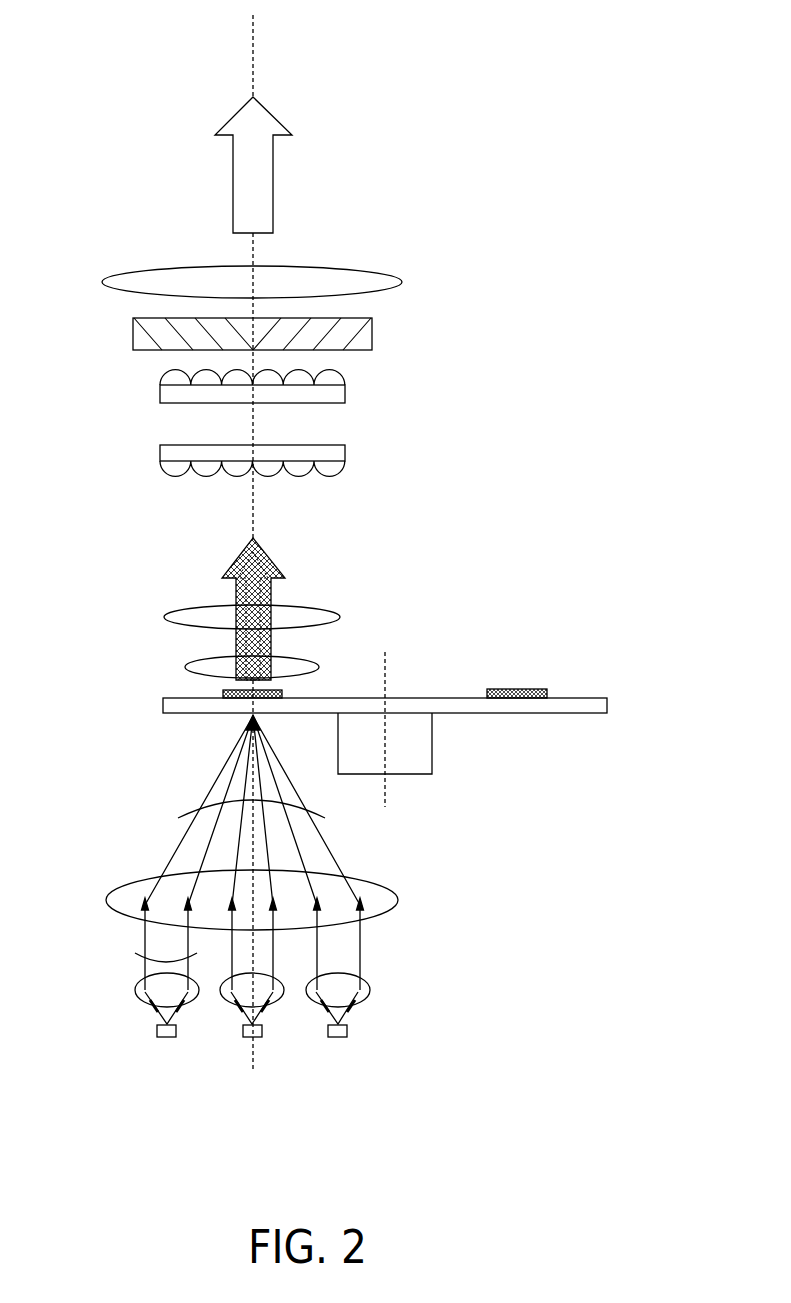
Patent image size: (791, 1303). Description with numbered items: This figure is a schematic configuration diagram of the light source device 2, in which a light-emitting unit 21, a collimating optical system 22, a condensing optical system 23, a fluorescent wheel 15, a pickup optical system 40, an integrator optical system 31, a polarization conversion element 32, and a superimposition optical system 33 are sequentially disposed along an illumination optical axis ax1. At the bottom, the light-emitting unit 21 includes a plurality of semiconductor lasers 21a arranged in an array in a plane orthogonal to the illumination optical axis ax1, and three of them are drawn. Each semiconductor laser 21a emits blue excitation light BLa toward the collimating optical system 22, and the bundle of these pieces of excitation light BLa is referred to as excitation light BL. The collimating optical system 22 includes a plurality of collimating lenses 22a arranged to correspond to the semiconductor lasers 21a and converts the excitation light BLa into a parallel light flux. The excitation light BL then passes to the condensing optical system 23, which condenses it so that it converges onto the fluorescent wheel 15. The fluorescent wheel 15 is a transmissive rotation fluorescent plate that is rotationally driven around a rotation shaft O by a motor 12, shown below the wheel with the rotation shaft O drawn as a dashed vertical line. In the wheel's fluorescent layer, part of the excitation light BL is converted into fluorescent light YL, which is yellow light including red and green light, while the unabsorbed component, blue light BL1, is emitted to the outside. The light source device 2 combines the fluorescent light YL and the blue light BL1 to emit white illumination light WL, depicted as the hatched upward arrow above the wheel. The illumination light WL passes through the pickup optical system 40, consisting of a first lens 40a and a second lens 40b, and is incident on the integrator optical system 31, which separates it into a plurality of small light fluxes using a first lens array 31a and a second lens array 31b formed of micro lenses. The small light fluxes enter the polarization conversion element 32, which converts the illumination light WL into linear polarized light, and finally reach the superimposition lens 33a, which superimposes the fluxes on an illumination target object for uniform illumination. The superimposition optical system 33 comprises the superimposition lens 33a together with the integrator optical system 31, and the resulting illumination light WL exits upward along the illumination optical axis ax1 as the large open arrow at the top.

The light source device 2 is at (452, 91).
The illumination optical axis ax1 is at (255, 50).
The illumination light WL is at (264, 170).
The superimposition optical system 33 is at (264, 235).
The superimposition lens 33a is at (382, 282).
The polarization conversion element 32 is at (358, 337).
The integrator optical system 31 is at (174, 424).
The first lens array 31a is at (201, 462).
The second lens array 31b is at (160, 393).
The blue light BL1 is at (276, 561).
The fluorescent light YL is at (273, 592).
The pickup optical system 40 is at (187, 623).
The first lens 40a is at (189, 667).
The second lens 40b is at (166, 615).
The fluorescent wheel 15 is at (550, 728).
The motor 12 is at (424, 763).
The rotation shaft O is at (386, 660).
The excitation light BL is at (186, 810).
The condensing optical system 23 is at (380, 893).
The excitation light BLa is at (136, 955).
The collimating optical system 22 is at (314, 988).
The collimating lens 22a is at (369, 990).
The light-emitting unit 21 is at (209, 1072).
The semiconductor laser 21a is at (170, 1040).